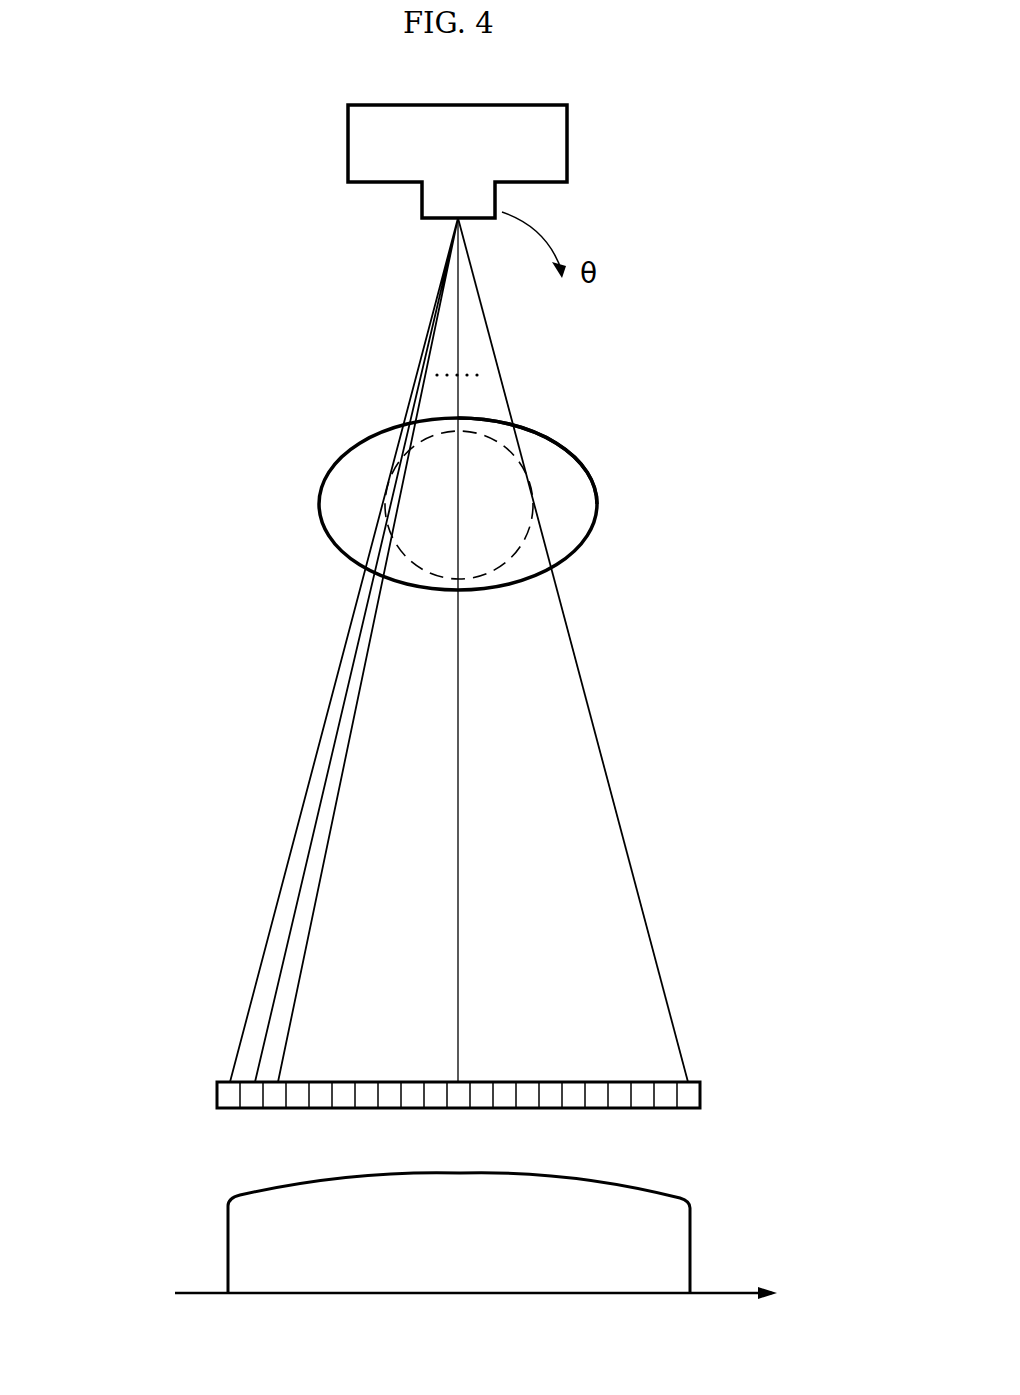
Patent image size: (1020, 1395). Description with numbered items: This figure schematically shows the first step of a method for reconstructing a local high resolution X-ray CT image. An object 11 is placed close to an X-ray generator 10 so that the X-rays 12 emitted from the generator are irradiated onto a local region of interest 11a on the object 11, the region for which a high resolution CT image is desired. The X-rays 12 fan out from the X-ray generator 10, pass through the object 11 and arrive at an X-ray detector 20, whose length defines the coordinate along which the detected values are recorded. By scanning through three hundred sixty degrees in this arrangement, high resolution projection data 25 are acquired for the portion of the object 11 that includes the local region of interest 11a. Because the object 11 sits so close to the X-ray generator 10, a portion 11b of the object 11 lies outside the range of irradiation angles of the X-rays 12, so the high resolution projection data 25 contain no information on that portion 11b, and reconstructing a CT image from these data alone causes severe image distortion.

The X-ray generator 10 is at (348, 148).
The object 11 is at (597, 502).
The local region of interest 11a is at (503, 543).
The portion of the target object outside the range of irradiation angles 11b is at (565, 468).
The X-rays 12 is at (294, 828).
The X-ray detector 20 is at (216, 1094).
The high resolution projection data 25 is at (227, 1250).